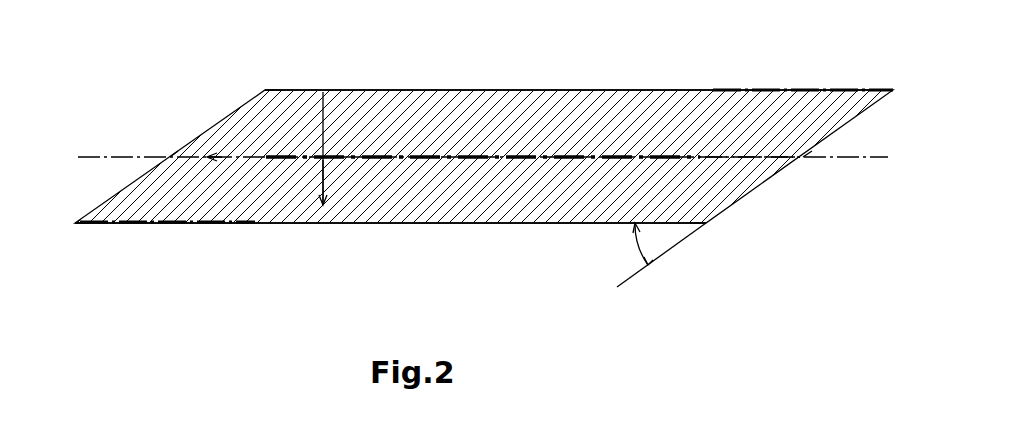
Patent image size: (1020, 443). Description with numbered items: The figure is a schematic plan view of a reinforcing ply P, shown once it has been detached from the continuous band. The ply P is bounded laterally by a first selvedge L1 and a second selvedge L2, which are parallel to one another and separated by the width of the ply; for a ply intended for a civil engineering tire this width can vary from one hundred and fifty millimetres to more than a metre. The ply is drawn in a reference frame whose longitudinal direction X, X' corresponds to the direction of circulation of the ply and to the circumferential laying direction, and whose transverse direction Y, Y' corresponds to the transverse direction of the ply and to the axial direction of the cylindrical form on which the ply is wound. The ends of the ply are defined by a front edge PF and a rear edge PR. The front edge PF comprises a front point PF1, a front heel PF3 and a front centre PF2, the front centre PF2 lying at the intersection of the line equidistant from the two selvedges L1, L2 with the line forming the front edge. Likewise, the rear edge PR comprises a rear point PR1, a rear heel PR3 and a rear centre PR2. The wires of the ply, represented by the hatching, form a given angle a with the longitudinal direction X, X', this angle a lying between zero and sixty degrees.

The front edge PF is at (265, 78).
The reinforcing ply P is at (705, 78).
The rear edge PR is at (892, 78).
The front point PF1 is at (75, 223).
The front centre PF2 is at (170, 157).
The front heel PF3 is at (265, 90).
The rear point PR1 is at (893, 92).
The rear centre PR2 is at (803, 158).
The rear heel PR3 is at (706, 223).
The first selvedge L1 is at (563, 103).
The second selvedge L2 is at (481, 226).
The longitudinal direction XX' X is at (750, 170).
The longitudinal direction XX' X' is at (212, 169).
The transverse direction YY' Y is at (313, 148).
The transverse direction YY' Y' is at (302, 185).
The angle a is at (631, 244).